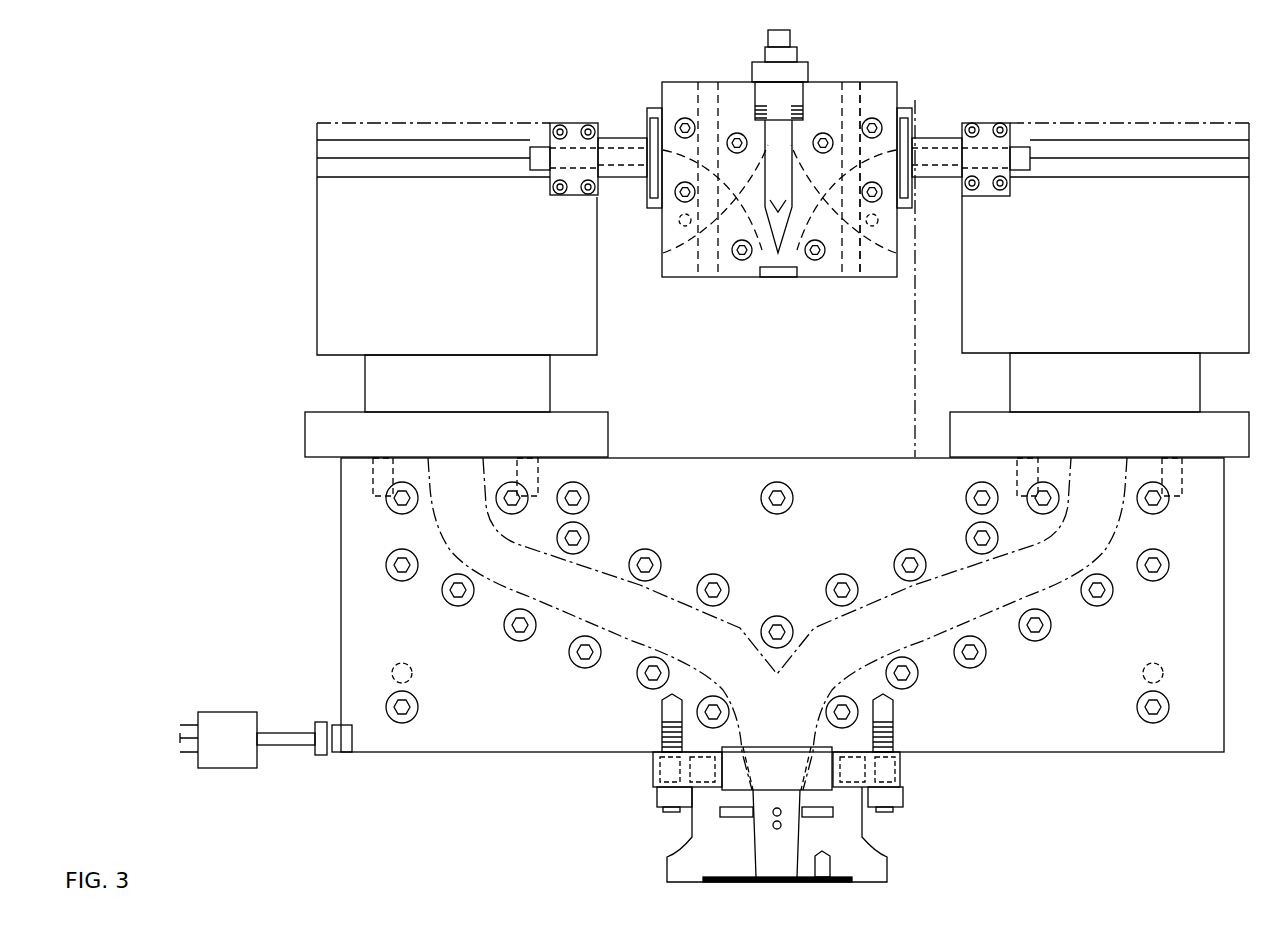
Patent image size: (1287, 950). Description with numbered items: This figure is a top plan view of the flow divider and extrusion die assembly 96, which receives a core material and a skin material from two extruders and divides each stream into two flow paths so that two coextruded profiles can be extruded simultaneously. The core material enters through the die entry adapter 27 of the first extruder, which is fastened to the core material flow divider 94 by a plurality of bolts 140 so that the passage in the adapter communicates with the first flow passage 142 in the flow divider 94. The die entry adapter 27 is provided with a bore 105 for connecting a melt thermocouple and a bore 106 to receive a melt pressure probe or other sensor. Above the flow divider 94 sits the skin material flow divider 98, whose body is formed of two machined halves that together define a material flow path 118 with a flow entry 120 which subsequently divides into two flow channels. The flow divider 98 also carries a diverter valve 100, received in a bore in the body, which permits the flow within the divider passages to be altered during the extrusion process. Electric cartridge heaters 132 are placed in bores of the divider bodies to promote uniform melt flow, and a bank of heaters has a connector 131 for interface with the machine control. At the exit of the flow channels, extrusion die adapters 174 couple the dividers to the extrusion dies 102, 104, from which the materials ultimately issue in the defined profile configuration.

The die entry adapter 27 is at (677, 865).
The flow divider 94 is at (1125, 709).
The flow divider and extrusion die assembly 96 is at (242, 474).
The flow divider 98 is at (683, 270).
The diverter valve 100 is at (777, 97).
The extrusion die 102 is at (1133, 279).
The extrusion die 104 is at (473, 279).
The bore 105 is at (692, 812).
The bore 106 is at (862, 812).
The material flow path 118 is at (663, 247).
The flow entry 120 is at (778, 278).
The connector 131 is at (217, 718).
The electric cartridge heater 132 is at (852, 92).
The bolts 140 is at (893, 800).
The first flow passage 142 is at (797, 740).
The extrusion die adapter 174 is at (626, 148).